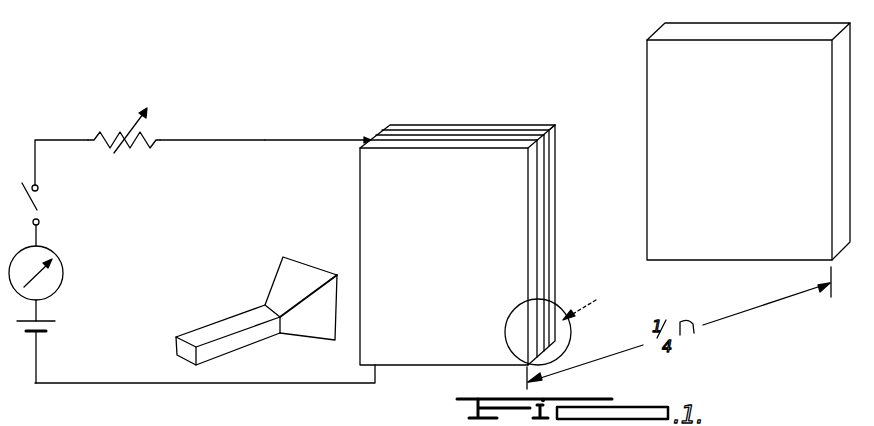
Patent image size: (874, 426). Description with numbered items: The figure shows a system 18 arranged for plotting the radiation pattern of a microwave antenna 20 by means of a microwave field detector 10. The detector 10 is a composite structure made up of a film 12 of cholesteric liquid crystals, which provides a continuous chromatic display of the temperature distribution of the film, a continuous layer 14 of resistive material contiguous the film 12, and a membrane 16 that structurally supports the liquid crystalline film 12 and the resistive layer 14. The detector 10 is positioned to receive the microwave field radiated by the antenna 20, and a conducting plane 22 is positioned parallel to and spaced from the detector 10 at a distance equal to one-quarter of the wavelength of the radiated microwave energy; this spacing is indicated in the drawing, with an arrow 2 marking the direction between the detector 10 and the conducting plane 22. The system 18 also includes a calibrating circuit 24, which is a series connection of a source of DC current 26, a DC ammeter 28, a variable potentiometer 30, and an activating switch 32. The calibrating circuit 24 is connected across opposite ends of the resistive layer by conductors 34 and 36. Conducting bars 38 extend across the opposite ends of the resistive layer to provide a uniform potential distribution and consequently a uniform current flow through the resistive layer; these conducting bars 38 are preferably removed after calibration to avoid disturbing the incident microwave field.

The direction arrow 2 is at (581, 295).
The microwave field detector 10 is at (496, 206).
The film of cholesteric liquid crystals 12 is at (535, 225).
The continuous layer of resistive material 14 is at (543, 185).
The membrane 16 is at (552, 150).
The system 18 is at (520, 70).
The microwave antenna 20 is at (283, 278).
The conducting plane 22 is at (653, 38).
The calibrating circuit 24 is at (77, 104).
The source of DC current 26 is at (48, 328).
The DC ammeter 28 is at (64, 273).
The variable potentiometer 30 is at (142, 124).
The activating switch 32 is at (37, 205).
The conductor 34 is at (265, 142).
The conductor 36 is at (246, 383).
The conducting bars 38 is at (424, 98).